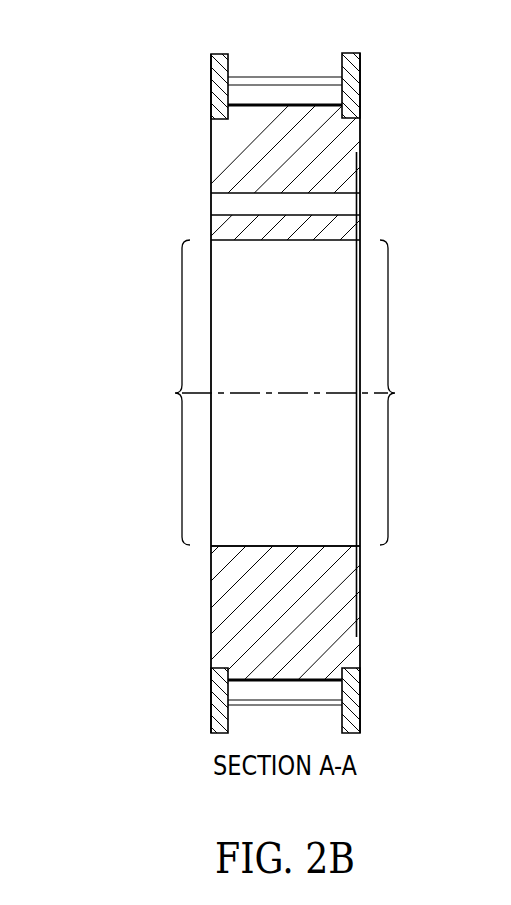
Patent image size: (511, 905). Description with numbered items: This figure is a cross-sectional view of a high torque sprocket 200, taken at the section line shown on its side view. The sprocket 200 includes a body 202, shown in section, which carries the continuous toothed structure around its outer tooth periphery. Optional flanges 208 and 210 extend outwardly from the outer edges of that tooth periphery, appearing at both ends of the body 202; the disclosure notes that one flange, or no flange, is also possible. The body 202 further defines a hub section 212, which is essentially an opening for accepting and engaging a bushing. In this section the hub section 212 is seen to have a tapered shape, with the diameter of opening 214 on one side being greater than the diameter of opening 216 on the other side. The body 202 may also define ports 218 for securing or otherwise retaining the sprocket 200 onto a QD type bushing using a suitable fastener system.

The sprocket 200 is at (418, 100).
The body 202 is at (212, 156).
The flange 208 is at (354, 697).
The flange 210 is at (219, 722).
The hub section 212 is at (305, 328).
The opening 214 is at (410, 392).
The opening 216 is at (263, 392).
The port 218 is at (217, 208).